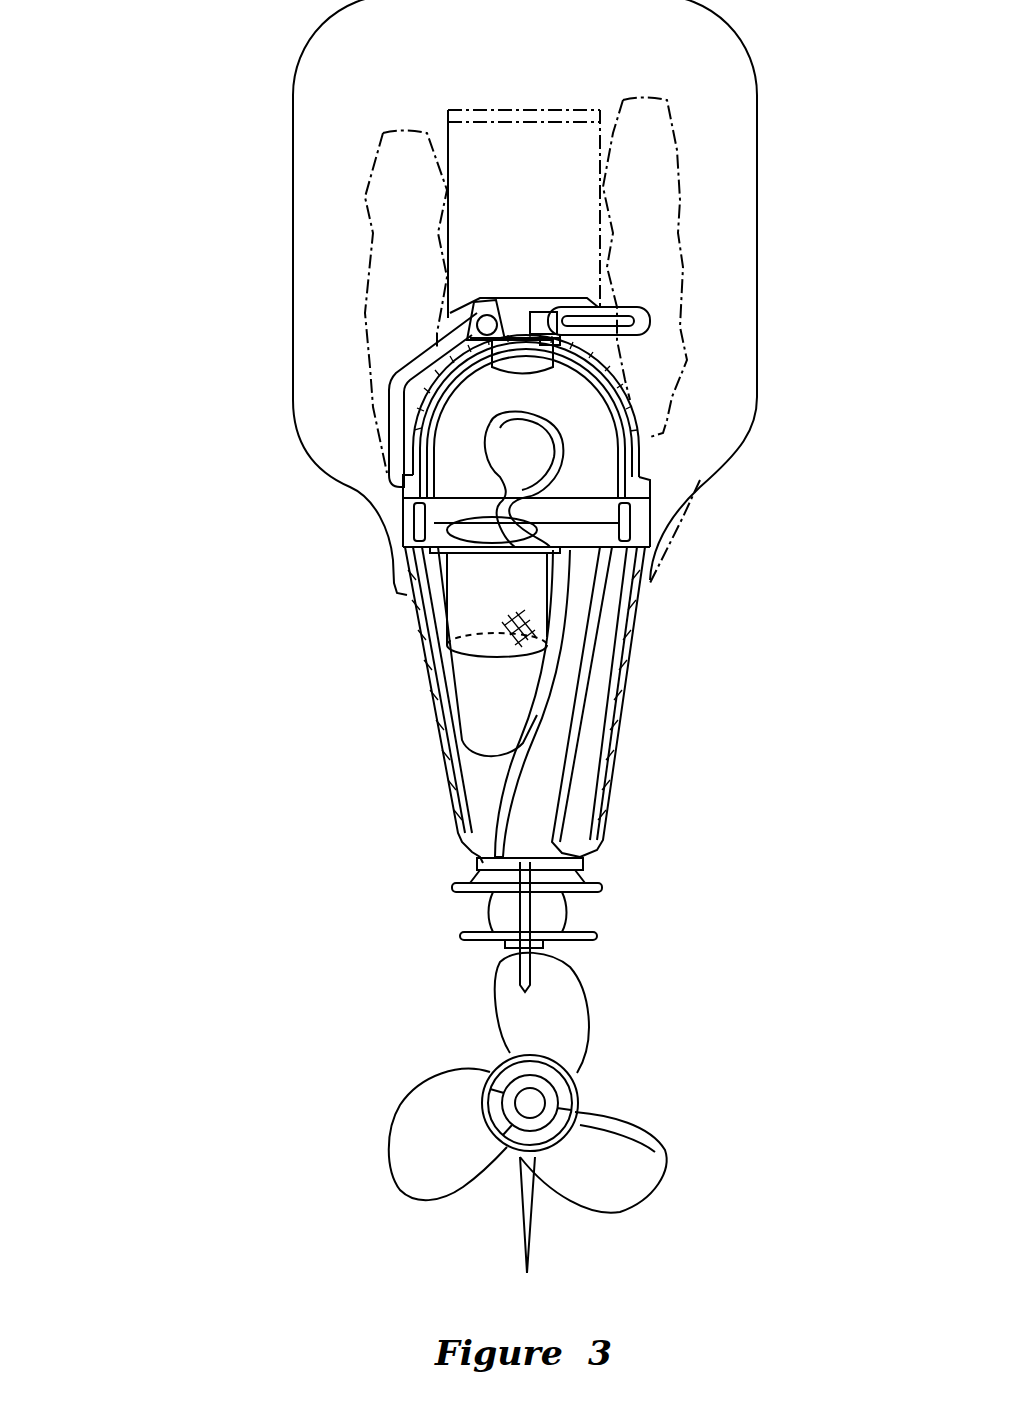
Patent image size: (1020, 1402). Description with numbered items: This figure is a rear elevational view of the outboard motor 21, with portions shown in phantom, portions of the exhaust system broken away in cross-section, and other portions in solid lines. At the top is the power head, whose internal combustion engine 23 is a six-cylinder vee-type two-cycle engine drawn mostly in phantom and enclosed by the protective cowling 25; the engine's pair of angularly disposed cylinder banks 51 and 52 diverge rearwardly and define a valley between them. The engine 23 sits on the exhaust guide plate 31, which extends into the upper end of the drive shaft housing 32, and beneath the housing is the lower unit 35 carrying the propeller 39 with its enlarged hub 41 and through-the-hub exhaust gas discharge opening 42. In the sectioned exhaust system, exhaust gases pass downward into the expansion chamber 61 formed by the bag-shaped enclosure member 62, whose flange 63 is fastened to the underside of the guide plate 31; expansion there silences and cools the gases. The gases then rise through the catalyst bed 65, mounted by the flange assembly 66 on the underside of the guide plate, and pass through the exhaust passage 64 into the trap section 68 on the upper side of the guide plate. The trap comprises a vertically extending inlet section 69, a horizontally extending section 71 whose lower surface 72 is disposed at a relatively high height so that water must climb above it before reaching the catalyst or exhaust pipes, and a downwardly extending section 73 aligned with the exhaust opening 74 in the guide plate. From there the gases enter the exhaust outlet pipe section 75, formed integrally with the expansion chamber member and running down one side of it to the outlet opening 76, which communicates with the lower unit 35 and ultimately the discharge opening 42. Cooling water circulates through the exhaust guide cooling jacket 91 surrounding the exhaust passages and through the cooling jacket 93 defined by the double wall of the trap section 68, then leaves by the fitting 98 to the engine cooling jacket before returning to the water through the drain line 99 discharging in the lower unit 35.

The outboard motor 21 is at (185, 352).
The internal combustion engine 23 is at (680, 113).
The protective cowling 25 is at (297, 110).
The exhaust guide plate 31 is at (405, 516).
The drive shaft housing 32 is at (453, 833).
The lower unit 35 is at (453, 938).
The propeller 39 is at (585, 1018).
The enlarged hub 41 is at (580, 1097).
The through-the-hub exhaust gas discharge opening 42 is at (658, 1153).
The cylinder bank 51 is at (358, 385).
The cylinder bank 52 is at (697, 257).
The expansion chamber 61 is at (513, 680).
The bag-shaped enclosure member 62 is at (468, 755).
The flange 63 is at (447, 553).
The exhaust passage 64 is at (410, 520).
The catalyst bed 65 is at (562, 592).
The flange assembly 66 is at (473, 560).
The trap section 68 is at (638, 410).
The inlet section 69 is at (450, 476).
The horizontally extending section 71 is at (507, 390).
The lower surface 72 is at (532, 418).
The downwardly extending section 73 is at (600, 455).
The exhaust opening 74 is at (523, 590).
The exhaust outlet pipe section 75 is at (607, 777).
The outlet opening 76 is at (527, 843).
The exhaust guide cooling jacket 91 is at (415, 492).
The cooling jacket 93 is at (530, 443).
The fitting 98 is at (647, 313).
The drain line 99 is at (387, 400).